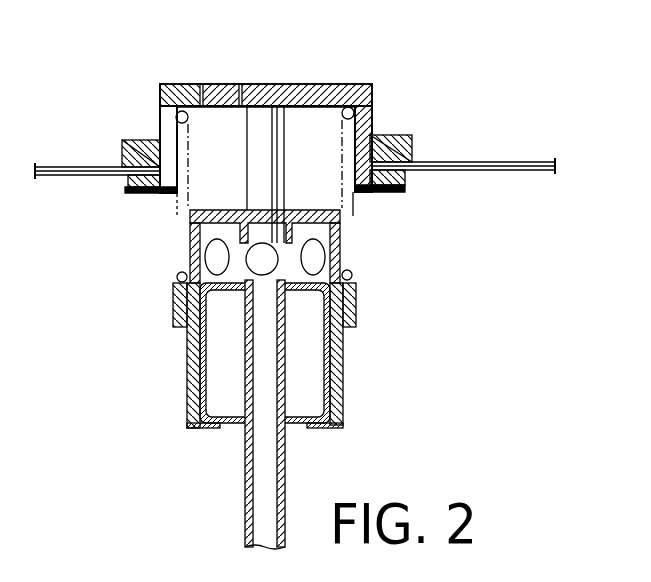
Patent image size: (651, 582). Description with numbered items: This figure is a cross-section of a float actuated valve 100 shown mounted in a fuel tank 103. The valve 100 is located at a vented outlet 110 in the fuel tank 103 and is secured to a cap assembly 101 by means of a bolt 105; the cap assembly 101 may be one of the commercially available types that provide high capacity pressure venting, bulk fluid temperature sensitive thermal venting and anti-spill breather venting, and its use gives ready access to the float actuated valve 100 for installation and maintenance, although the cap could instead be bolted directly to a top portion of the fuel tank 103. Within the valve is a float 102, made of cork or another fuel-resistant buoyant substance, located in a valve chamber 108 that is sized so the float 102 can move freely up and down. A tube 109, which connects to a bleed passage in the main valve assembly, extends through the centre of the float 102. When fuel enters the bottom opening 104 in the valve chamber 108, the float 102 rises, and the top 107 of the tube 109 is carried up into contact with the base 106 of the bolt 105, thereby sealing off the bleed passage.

The float actuated valve 100 is at (143, 391).
The cap assembly 101 is at (302, 84).
The float 102 is at (220, 353).
The fuel tank 103 is at (485, 162).
The bottom opening 104 is at (307, 427).
The bolt 105 is at (250, 163).
The base of the bolt 106 is at (265, 252).
The top of tube 107 is at (351, 273).
The valve chamber 108 is at (343, 375).
The tube 109 is at (245, 492).
The vented outlet 110 is at (320, 152).